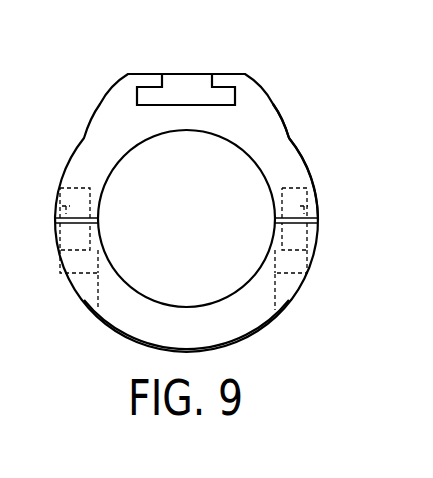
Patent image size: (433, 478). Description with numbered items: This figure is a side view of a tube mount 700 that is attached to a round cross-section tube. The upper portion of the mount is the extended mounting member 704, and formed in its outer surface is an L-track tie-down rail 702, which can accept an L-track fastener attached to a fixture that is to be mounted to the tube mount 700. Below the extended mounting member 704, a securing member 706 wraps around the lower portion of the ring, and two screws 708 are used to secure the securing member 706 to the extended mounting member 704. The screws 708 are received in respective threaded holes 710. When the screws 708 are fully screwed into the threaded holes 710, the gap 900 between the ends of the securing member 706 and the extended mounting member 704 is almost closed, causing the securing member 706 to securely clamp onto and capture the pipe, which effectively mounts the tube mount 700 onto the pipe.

The tube mount 700 is at (293, 95).
The L-track tie-down rail 702 is at (243, 72).
The extended mounting member 704 is at (293, 140).
The securing member 706 is at (238, 340).
The screw 708 is at (59, 264).
The threaded hole 710 is at (60, 200).
The gap 900 is at (318, 220).